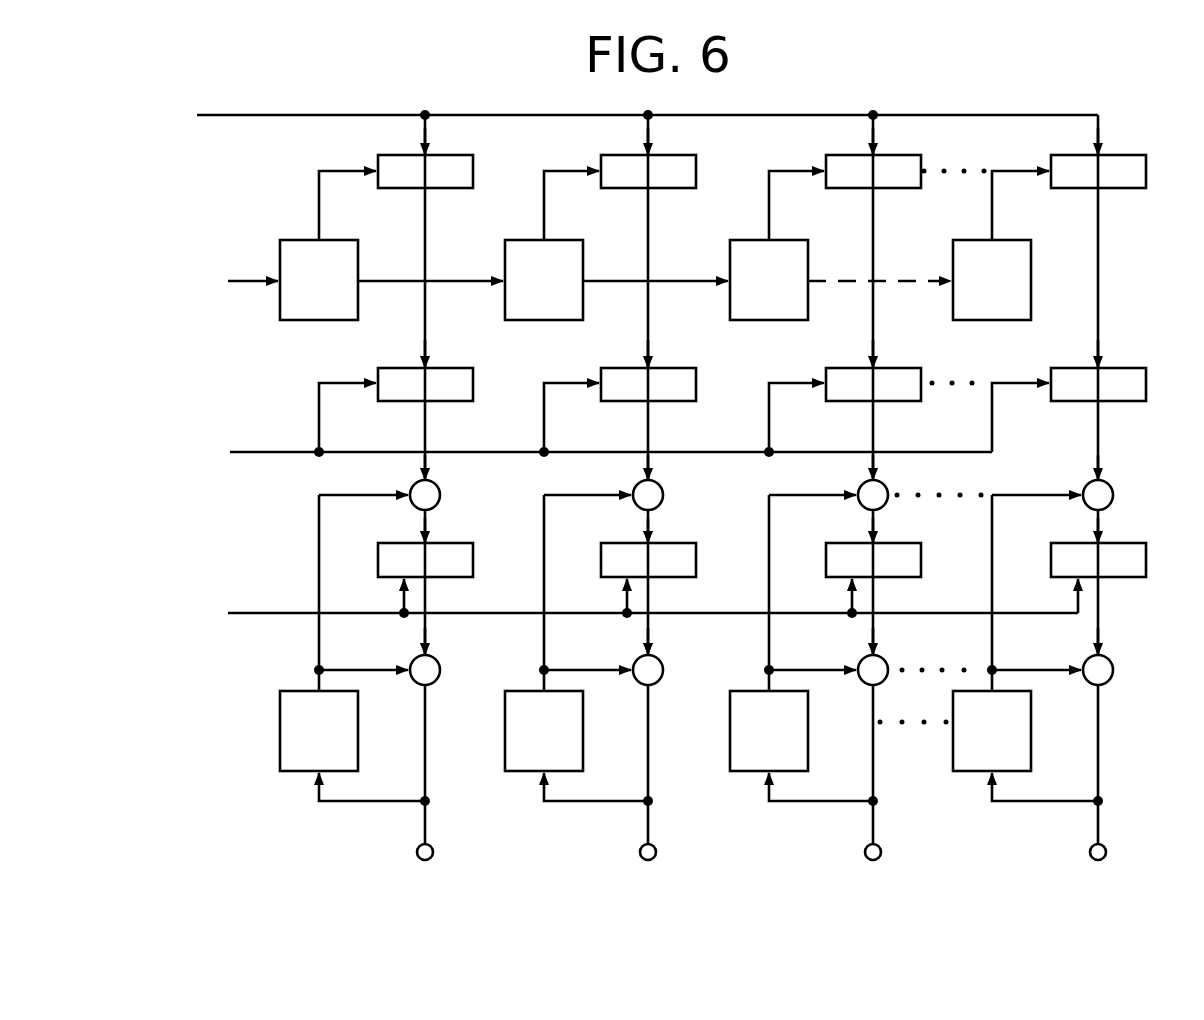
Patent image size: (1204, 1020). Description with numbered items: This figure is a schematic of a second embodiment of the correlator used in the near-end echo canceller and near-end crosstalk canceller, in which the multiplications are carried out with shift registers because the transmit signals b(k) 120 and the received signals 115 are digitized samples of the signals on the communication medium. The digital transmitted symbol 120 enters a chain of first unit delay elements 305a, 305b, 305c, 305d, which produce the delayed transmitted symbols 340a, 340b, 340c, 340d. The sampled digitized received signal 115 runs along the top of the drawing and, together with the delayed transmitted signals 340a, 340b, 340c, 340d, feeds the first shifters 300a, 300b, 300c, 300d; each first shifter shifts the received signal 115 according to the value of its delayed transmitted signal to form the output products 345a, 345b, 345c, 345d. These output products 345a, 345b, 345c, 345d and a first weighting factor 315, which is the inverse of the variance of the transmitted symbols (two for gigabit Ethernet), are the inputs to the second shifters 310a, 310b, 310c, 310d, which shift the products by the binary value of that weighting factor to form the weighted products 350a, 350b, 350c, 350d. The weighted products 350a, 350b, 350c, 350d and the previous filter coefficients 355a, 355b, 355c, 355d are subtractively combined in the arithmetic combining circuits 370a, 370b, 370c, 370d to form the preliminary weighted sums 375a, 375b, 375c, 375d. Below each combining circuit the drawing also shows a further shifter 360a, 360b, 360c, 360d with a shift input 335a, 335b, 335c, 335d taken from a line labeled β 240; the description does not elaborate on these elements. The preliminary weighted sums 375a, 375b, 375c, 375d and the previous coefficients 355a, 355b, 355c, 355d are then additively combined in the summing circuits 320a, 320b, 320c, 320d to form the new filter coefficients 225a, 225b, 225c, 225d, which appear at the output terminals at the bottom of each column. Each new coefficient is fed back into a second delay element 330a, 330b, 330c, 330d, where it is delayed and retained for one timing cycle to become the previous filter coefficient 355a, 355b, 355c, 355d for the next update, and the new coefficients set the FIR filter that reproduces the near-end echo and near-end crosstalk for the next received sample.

The received signal 115 is at (168, 132).
The transmit signal 120 is at (202, 300).
The first weighting factor 315 is at (235, 435).
The beta input 240 is at (200, 607).
The delayed transmitted symbol 340a is at (342, 170).
The delayed transmitted symbol 340b is at (567, 170).
The delayed transmitted symbol 340c is at (791, 170).
The delayed transmitted symbol 340d is at (1016, 170).
The first shifter 300a is at (417, 190).
The first shifter 300b is at (640, 190).
The first shifter 300c is at (865, 190).
The first shifter 300d is at (1090, 190).
The first unit delay element 305a is at (320, 320).
The first unit delay element 305b is at (543, 320).
The first unit delay element 305c is at (768, 320).
The first unit delay element 305d is at (991, 320).
The output product 345a is at (423, 330).
The output product 345b is at (646, 330).
The output product 345c is at (871, 330).
The output product 345d is at (1100, 297).
The weighted product 350a is at (423, 428).
The weighted product 350b is at (646, 428).
The weighted product 350c is at (871, 428).
The weighted product 350d is at (1100, 445).
The second shifter 310a is at (440, 403).
The second shifter 310b is at (663, 403).
The second shifter 310c is at (888, 403).
The second shifter 310d is at (1118, 370).
The arithmetic combining circuit 370a is at (410, 483).
The arithmetic combining circuit 370b is at (633, 483).
The arithmetic combining circuit 370c is at (858, 483).
The arithmetic combining circuit 370d is at (1085, 488).
The preliminary weighted sum 375a is at (437, 512).
The preliminary weighted sum 375b is at (660, 512).
The preliminary weighted sum 375c is at (885, 512).
The preliminary weighted sum 375d is at (1105, 515).
The shift control line 335a is at (377, 557).
The shift control line 335b is at (600, 557).
The shift control line 335c is at (825, 557).
The shift control line 335d is at (1050, 565).
The shift register 360a is at (428, 598).
The shift register 360b is at (651, 598).
The shift register 360c is at (876, 598).
The shift register 360d is at (1103, 598).
The previous filter coefficient 355a is at (317, 640).
The previous filter coefficient 355b is at (542, 642).
The previous filter coefficient 355c is at (767, 642).
The previous filter coefficient 355d is at (992, 641).
The summing circuit 320a is at (417, 683).
The summing circuit 320b is at (640, 683).
The summing circuit 320c is at (865, 683).
The summing circuit 320d is at (1090, 685).
The second delay element 330a is at (280, 728).
The second delay element 330b is at (505, 730).
The second delay element 330c is at (730, 730).
The second delay element 330d is at (953, 742).
The new filter coefficient 225a is at (315, 857).
The new filter coefficient 225b is at (548, 857).
The new filter coefficient 225c is at (766, 857).
The new filter coefficient 225d is at (996, 851).